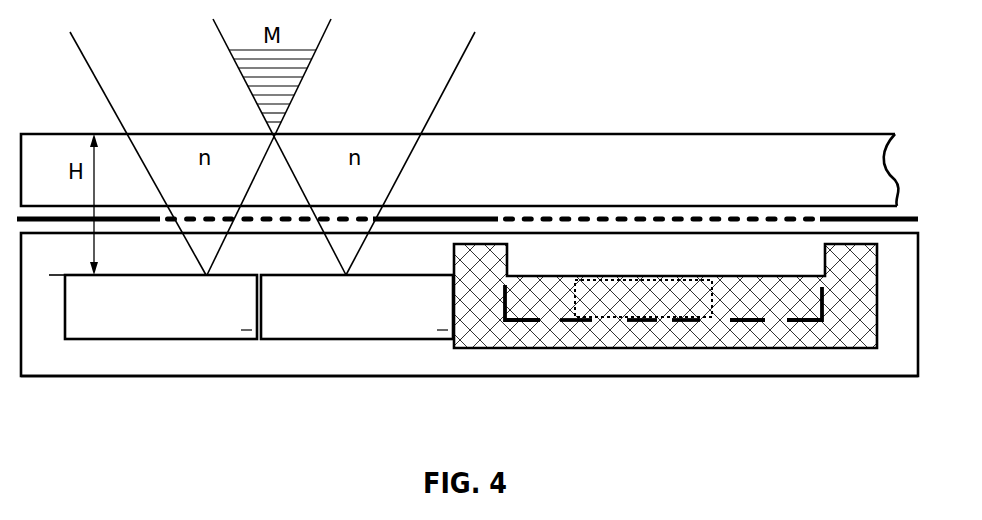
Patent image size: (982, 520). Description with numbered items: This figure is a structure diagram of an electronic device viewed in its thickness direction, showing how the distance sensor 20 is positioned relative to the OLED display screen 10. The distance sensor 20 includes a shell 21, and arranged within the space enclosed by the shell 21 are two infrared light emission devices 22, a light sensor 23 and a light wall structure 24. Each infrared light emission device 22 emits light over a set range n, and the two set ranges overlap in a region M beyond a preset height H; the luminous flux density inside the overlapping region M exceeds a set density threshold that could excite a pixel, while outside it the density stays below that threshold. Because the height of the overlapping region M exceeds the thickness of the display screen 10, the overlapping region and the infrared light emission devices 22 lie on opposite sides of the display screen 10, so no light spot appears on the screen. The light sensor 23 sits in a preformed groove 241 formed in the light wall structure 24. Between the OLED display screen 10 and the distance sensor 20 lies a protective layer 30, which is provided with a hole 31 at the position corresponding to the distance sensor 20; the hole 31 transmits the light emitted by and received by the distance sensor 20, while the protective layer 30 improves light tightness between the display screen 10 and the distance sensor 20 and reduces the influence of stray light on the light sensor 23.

The display screen 10 is at (50, 201).
The distance sensor 20 is at (50, 368).
The shell 21 is at (361, 379).
The infrared light emission device 22 is at (205, 349).
The light sensor 23 is at (623, 312).
The light wall structure 24 is at (667, 353).
The preformed groove 241 is at (771, 324).
The protective layer 30 is at (838, 217).
The hole 31 is at (714, 217).